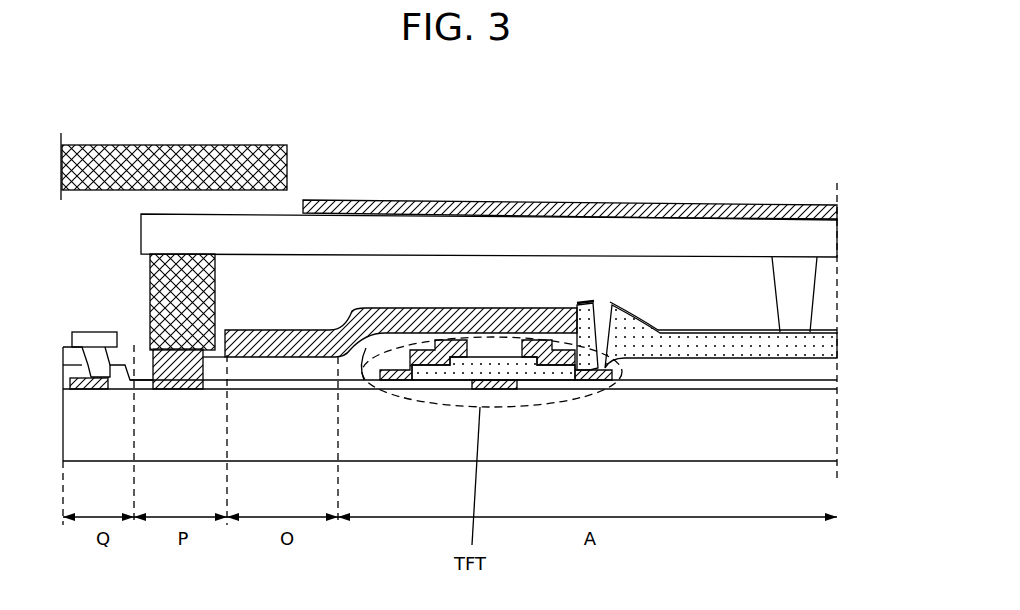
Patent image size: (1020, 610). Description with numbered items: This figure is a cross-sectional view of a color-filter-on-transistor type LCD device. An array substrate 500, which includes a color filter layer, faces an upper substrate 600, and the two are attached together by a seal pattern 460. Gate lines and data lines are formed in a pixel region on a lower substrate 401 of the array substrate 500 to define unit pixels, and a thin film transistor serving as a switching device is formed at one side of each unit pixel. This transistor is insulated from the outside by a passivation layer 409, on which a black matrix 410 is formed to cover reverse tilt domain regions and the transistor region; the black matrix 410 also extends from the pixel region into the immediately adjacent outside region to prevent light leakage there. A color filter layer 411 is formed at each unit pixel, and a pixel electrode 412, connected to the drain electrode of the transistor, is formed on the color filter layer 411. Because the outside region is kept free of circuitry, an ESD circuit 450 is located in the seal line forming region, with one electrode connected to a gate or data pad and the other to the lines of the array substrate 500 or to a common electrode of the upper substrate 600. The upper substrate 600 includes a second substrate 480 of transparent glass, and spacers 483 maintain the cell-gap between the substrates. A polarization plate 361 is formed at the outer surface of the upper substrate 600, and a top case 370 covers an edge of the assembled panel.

The top case 370 is at (226, 160).
The polarization plate 361 is at (474, 212).
The second substrate 480 is at (348, 232).
The upper substrate 600 is at (524, 203).
The seal pattern 460 is at (160, 272).
The ESD circuit 450 is at (148, 358).
The black matrix 410 is at (443, 320).
The passivation layer 409 is at (272, 368).
The array substrate 500 is at (486, 446).
The lower substrate 401 is at (750, 440).
The spacers 483 is at (790, 273).
The color filter layer 411 is at (677, 345).
The pixel electrode 412 is at (725, 333).